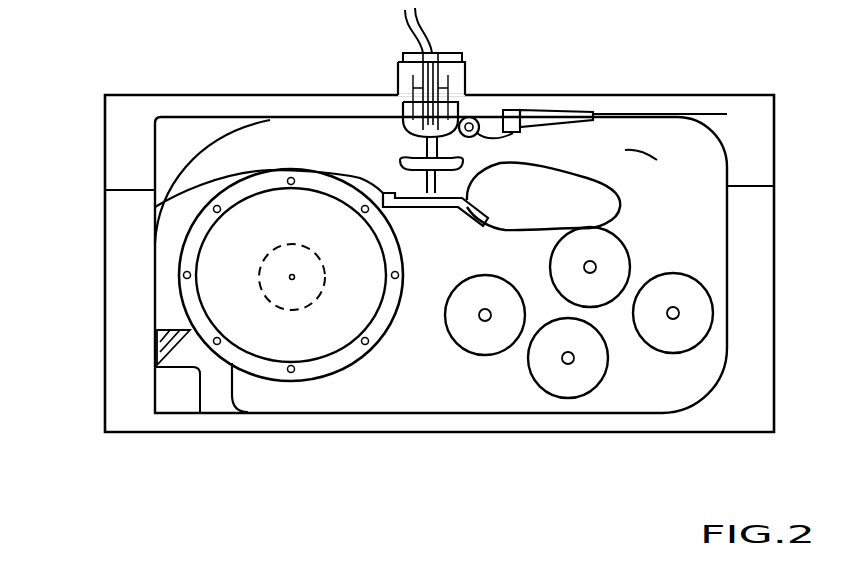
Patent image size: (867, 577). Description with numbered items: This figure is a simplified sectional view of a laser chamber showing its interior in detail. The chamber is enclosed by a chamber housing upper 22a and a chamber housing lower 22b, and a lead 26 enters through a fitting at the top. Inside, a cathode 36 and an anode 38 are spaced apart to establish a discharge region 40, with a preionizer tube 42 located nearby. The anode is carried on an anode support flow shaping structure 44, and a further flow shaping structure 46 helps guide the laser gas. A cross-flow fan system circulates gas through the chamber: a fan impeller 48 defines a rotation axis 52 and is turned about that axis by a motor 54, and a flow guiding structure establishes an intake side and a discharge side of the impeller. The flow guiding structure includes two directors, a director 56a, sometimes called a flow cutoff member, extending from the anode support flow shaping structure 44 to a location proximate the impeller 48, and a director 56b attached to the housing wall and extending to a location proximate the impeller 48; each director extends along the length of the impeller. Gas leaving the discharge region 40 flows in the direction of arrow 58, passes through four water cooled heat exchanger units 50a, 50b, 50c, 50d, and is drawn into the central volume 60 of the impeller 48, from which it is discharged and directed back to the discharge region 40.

The chamber housing upper 22a is at (187, 95).
The chamber housing lower 22b is at (237, 433).
The electrical lead 26 is at (428, 33).
The cathode 36 is at (403, 133).
The anode 38 is at (400, 162).
The discharge region 40 is at (403, 137).
The preionizer tube 42 is at (470, 137).
The anode support flow shaping structure 44 is at (480, 220).
The flow shaping structure 46 is at (560, 130).
The fan impeller 48 is at (405, 272).
The water cooled heat exchanger unit 50a is at (457, 343).
The water cooled heat exchanger unit 50b is at (528, 364).
The water cooled heat exchanger unit 50c is at (683, 348).
The water cooled heat exchanger unit 50d is at (623, 238).
The rotation axis 52 is at (292, 277).
The motor 54 is at (283, 247).
The director 56a is at (237, 190).
The director 56b is at (233, 380).
The arrow 58 is at (670, 183).
The central volume 60 is at (223, 293).